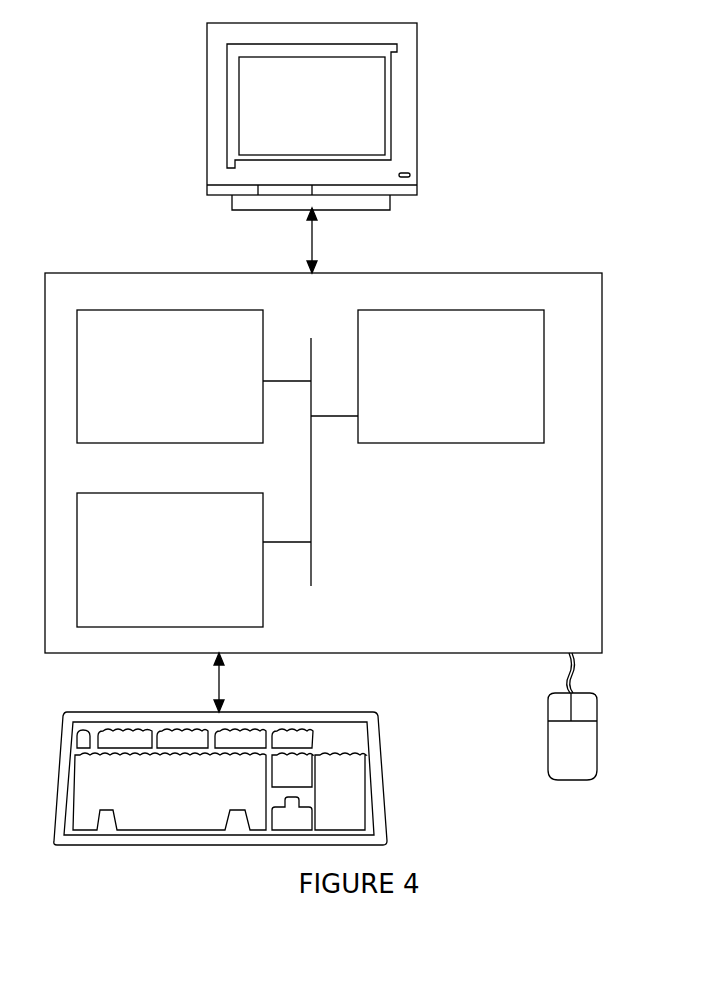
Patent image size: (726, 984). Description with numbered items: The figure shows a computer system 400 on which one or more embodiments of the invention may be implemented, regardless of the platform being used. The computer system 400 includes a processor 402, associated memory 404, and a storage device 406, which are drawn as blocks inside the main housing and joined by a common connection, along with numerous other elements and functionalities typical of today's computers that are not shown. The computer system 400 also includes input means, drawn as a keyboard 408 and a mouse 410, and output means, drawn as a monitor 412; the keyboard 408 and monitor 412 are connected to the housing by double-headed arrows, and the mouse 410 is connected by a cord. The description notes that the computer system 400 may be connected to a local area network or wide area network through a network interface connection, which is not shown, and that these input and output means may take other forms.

The computer system 400 is at (618, 150).
The processor 402 is at (453, 388).
The memory 404 is at (153, 388).
The storage device 406 is at (151, 571).
The keyboard 408 is at (147, 813).
The mouse 410 is at (555, 757).
The monitor 412 is at (295, 119).